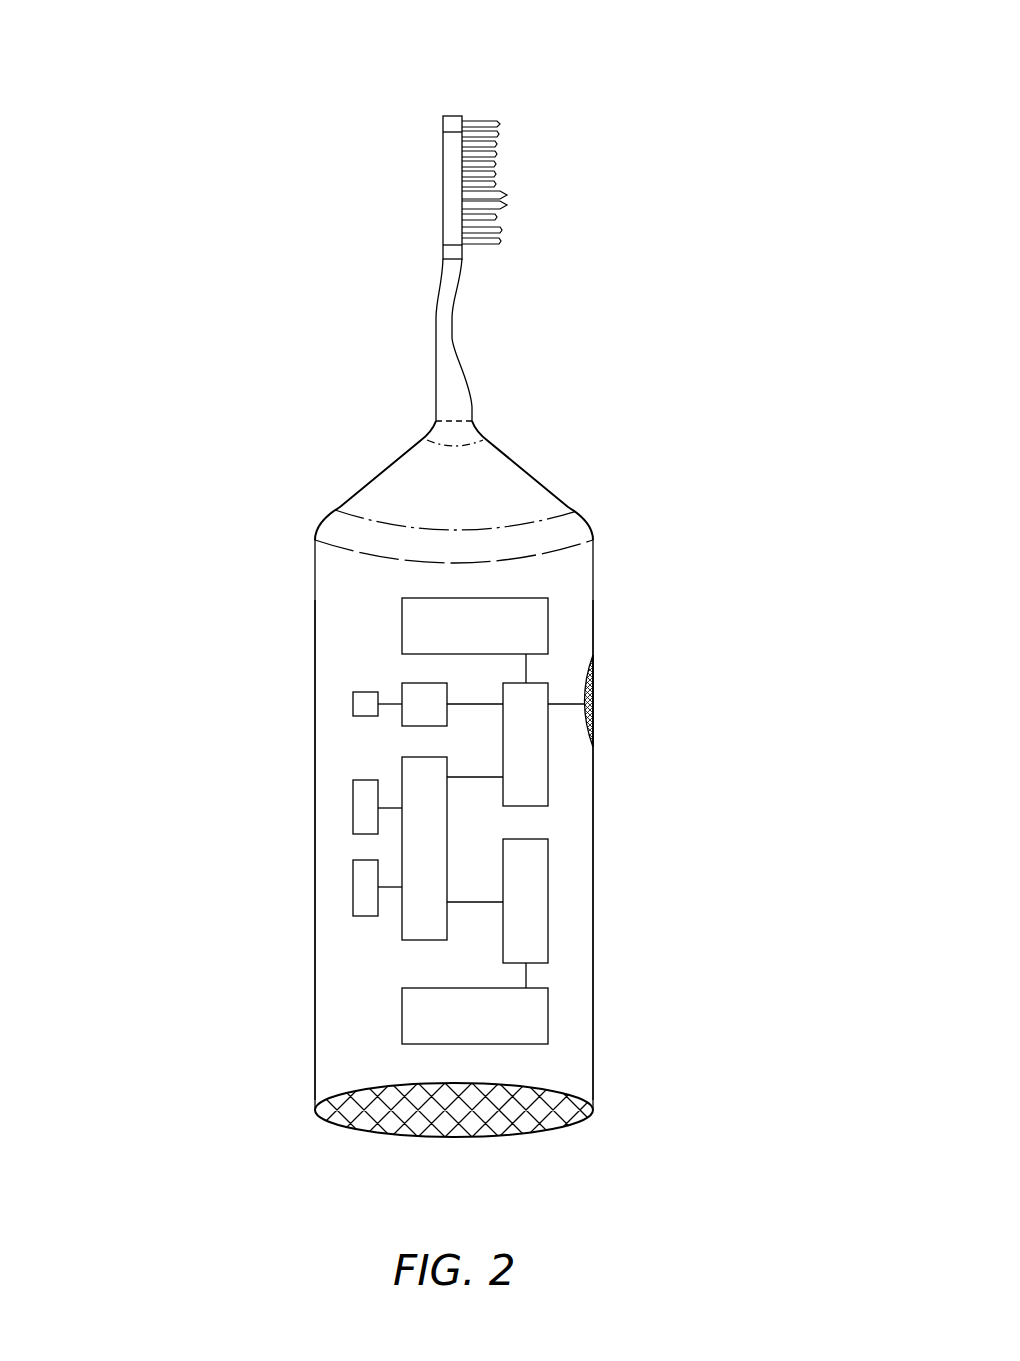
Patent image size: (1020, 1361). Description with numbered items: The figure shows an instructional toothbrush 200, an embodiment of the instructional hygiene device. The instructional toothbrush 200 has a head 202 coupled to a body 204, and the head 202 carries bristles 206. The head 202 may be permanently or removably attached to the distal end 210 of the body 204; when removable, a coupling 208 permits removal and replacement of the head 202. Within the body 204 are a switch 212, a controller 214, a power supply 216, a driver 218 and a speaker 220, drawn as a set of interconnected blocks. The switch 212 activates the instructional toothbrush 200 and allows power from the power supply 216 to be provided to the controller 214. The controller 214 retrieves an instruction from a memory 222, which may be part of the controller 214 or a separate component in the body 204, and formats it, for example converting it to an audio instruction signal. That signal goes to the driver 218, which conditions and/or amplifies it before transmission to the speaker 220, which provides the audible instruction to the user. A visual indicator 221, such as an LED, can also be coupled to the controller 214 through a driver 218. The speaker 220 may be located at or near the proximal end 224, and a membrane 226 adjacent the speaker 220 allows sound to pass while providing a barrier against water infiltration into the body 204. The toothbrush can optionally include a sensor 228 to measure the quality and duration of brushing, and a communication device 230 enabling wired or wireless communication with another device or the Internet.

The instructional toothbrush 200 is at (748, 112).
The head 202 is at (385, 228).
The body 204 is at (197, 858).
The bristles 206 is at (492, 100).
The coupling 208 is at (530, 488).
The distal end 210 is at (242, 548).
The switch 212 is at (584, 702).
The controller 214 is at (548, 780).
The power supply 216 is at (402, 926).
The driver 218 is at (418, 682).
The speaker 220 is at (548, 1018).
The visual indicator 221 is at (353, 705).
The memory 222 is at (548, 614).
The proximal end 224 is at (352, 1162).
The membrane 226 is at (590, 1118).
The sensor 228 is at (353, 809).
The communication device 230 is at (353, 888).